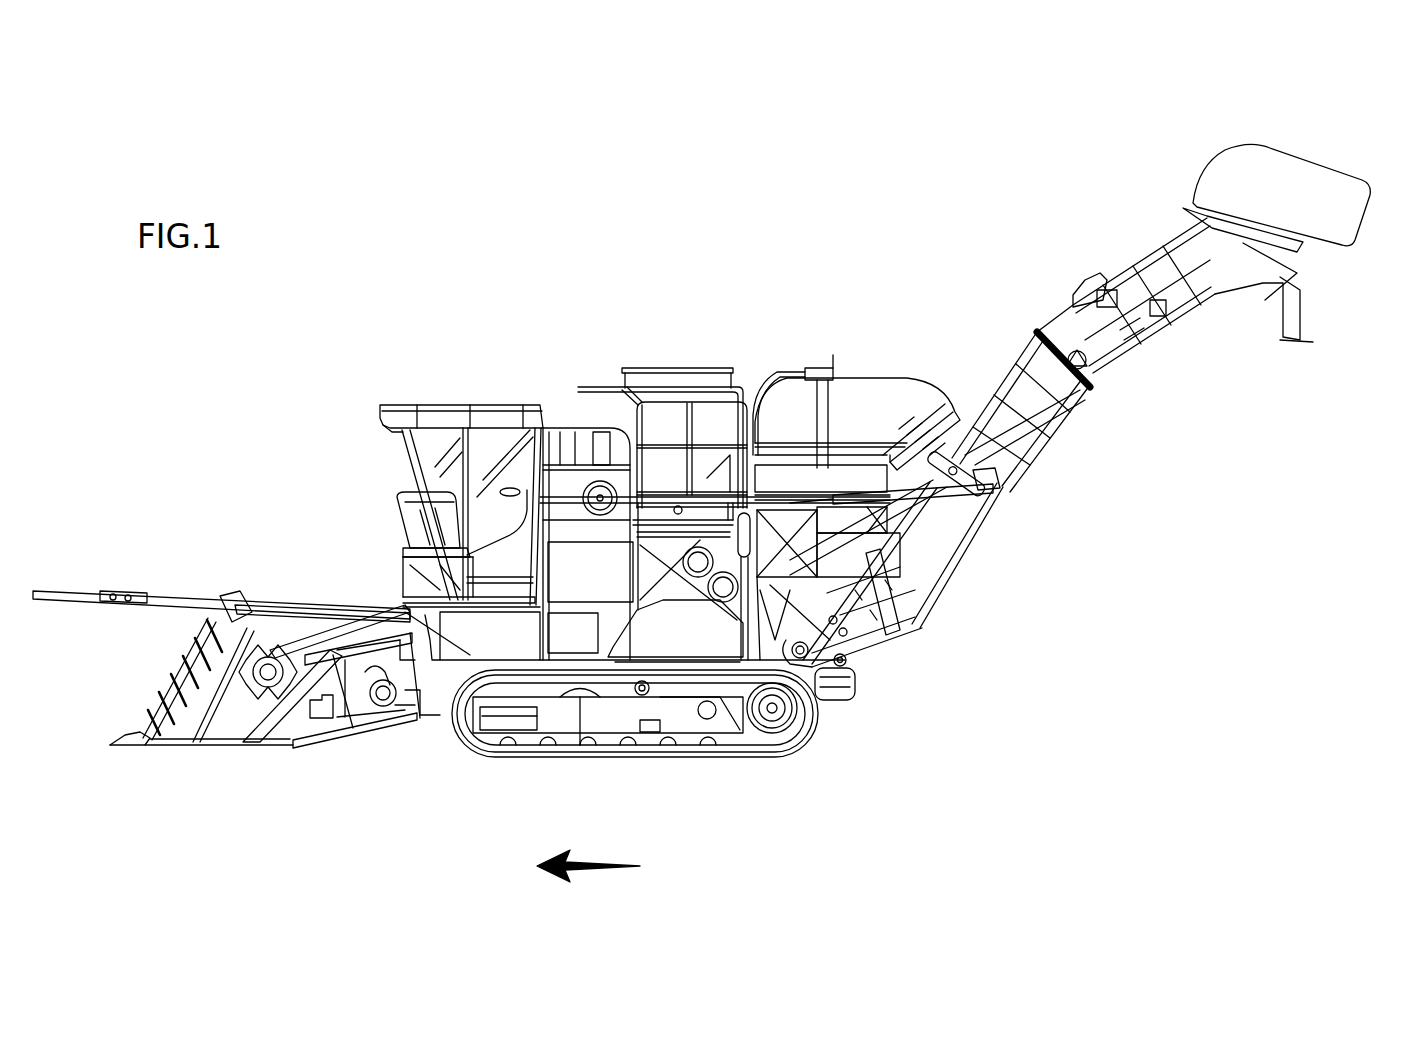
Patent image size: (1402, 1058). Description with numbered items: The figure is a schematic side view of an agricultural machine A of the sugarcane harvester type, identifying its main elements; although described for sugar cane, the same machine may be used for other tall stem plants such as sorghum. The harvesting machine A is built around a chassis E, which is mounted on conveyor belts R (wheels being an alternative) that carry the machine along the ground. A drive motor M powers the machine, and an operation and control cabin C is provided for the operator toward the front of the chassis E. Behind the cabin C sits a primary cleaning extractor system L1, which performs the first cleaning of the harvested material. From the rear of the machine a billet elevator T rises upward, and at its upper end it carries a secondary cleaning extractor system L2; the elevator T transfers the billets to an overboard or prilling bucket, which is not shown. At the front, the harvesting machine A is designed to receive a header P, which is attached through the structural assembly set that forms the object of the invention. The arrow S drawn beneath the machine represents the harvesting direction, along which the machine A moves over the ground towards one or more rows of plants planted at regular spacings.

The agricultural machine A is at (695, 295).
The operation and control cabin C is at (440, 416).
The drive motor M is at (572, 562).
The primary cleaning extractor system L1 is at (908, 393).
The secondary cleaning extractor system L2 is at (1237, 155).
The header P is at (262, 562).
The chassis E is at (432, 673).
The conveyor belts R is at (628, 740).
The billet elevator T is at (1000, 530).
The arrow (harvesting direction) S is at (588, 879).